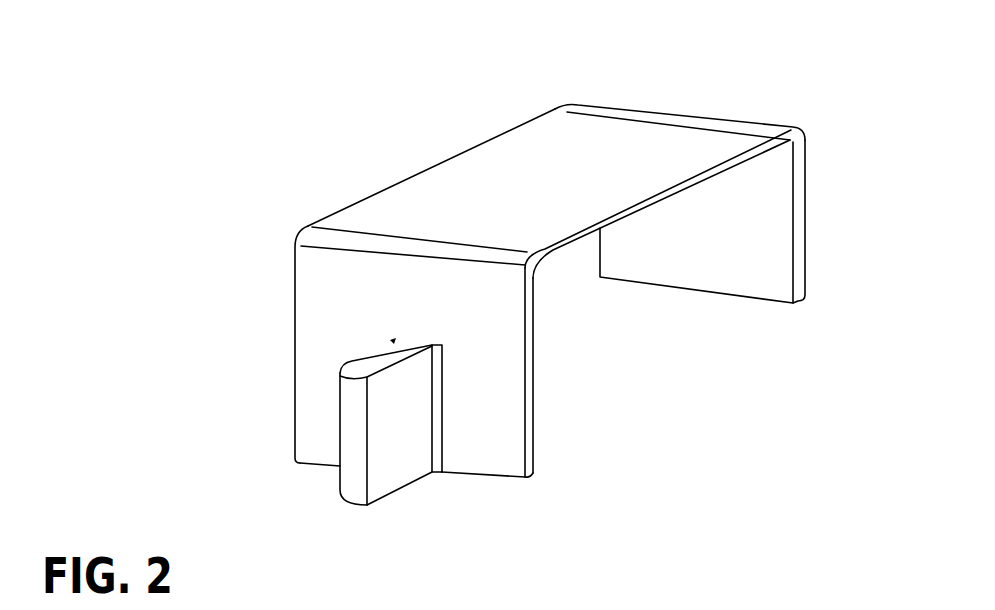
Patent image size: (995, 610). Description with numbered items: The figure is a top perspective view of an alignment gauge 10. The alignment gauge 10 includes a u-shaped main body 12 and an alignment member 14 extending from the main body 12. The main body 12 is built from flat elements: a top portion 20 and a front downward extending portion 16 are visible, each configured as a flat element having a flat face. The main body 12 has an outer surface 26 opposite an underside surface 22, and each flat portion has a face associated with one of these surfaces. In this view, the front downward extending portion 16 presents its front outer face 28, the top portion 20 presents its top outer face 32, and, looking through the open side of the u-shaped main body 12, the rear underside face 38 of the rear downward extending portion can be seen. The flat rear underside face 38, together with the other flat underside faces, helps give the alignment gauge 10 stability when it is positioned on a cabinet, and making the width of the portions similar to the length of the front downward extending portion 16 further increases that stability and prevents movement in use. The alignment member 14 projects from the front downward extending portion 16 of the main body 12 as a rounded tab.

The alignment gauge 10 is at (378, 155).
The main body 12 is at (388, 207).
The alignment member 14 is at (353, 407).
The front downward extending portion 16 is at (528, 413).
The top portion 20 is at (492, 140).
The underside surface 22 is at (562, 315).
The outer surface 26 is at (608, 167).
The front outer face 28 is at (354, 345).
The top outer face 32 is at (506, 203).
The rear underside face 38 is at (703, 245).